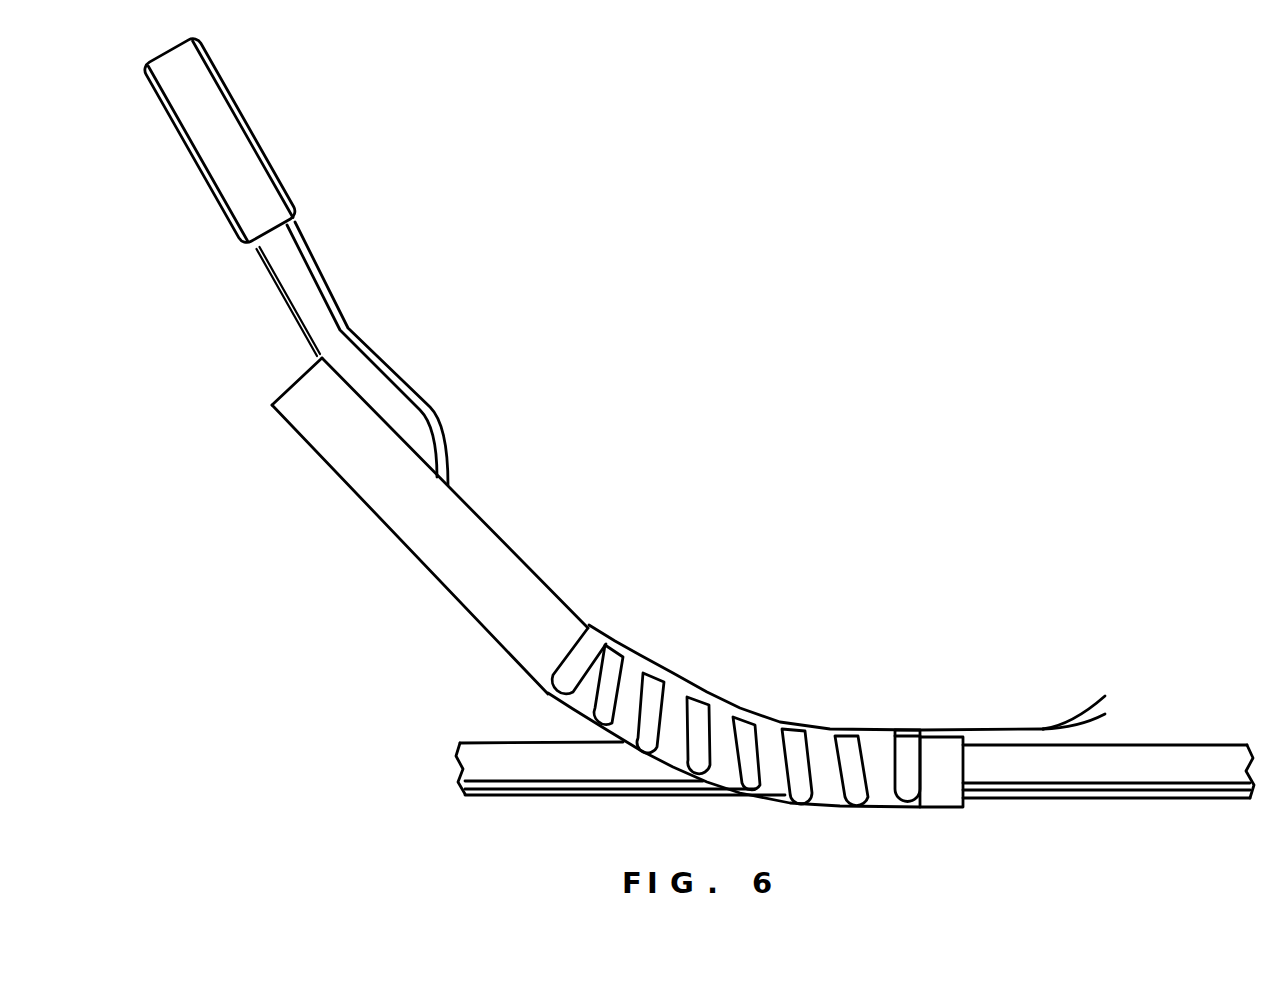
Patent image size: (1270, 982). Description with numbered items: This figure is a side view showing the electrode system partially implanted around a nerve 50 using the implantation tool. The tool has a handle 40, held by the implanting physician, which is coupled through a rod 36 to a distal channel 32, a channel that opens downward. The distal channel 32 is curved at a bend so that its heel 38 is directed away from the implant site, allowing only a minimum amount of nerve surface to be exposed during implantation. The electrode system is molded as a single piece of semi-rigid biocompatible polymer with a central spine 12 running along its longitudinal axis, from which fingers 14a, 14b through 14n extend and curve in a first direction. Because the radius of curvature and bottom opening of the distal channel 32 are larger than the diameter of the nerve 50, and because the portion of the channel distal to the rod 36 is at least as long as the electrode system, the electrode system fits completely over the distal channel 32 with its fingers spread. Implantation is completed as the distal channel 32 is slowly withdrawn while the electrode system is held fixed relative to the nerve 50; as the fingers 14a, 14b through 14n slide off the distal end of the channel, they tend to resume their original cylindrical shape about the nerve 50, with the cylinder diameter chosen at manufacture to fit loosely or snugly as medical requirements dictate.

The central spine 12 is at (803, 733).
The finger 14a is at (563, 682).
The finger 14b is at (605, 717).
The finger 14n is at (907, 793).
The distal channel 32 is at (453, 552).
The rod 36 is at (415, 437).
The heel 38 is at (298, 397).
The handle 40 is at (213, 120).
The nerve 50 is at (1090, 770).